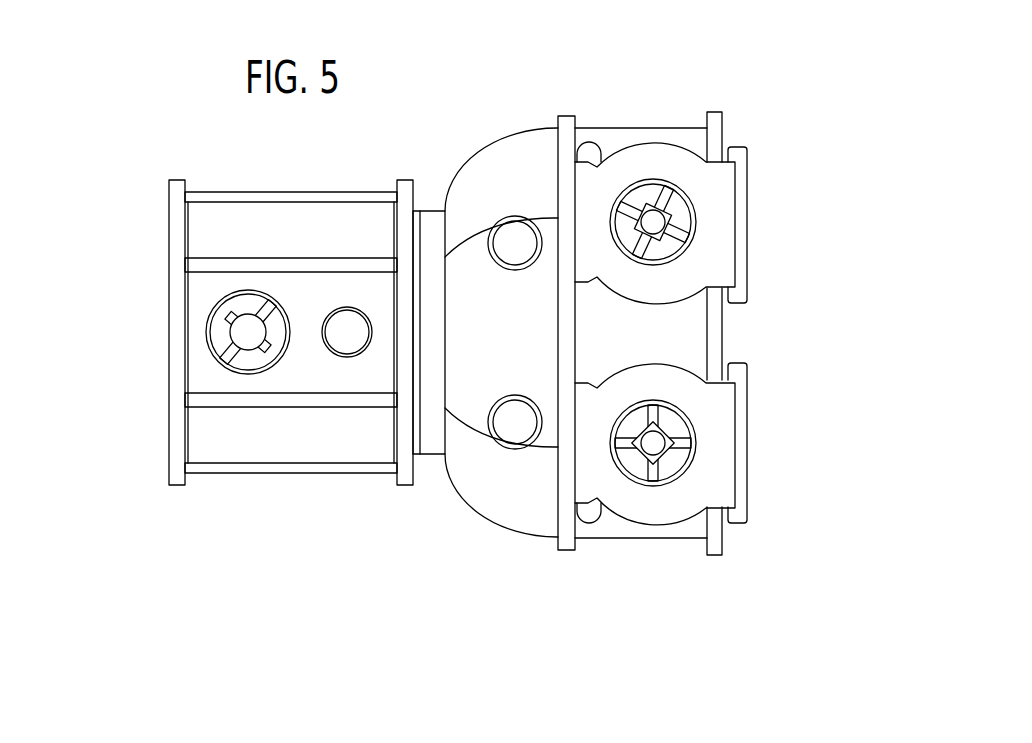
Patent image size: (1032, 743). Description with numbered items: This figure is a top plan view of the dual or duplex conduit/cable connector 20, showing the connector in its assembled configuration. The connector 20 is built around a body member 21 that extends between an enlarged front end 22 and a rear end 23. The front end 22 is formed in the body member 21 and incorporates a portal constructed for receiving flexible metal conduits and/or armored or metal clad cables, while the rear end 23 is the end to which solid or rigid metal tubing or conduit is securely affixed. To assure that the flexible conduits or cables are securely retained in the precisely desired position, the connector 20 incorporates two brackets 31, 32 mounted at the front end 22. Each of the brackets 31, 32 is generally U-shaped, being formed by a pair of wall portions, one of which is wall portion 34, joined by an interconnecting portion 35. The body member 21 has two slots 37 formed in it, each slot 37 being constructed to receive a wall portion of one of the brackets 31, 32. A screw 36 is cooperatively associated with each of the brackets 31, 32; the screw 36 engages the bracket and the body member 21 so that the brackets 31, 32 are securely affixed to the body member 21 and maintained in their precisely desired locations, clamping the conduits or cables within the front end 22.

The duplex conduit/cable connector 20 is at (160, 160).
The body member 21 is at (450, 478).
The front end 22 is at (723, 343).
The rear end 23 is at (167, 429).
The bracket 31 is at (727, 418).
The bracket 32 is at (723, 250).
The wall portion 34 is at (738, 150).
The interconnecting portion 35 is at (715, 178).
The screw 36 is at (657, 195).
The slot 37 is at (588, 152).